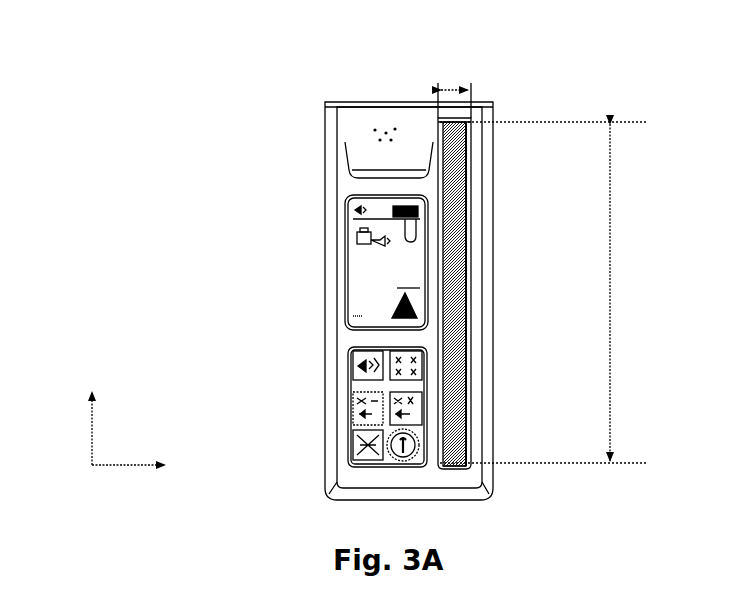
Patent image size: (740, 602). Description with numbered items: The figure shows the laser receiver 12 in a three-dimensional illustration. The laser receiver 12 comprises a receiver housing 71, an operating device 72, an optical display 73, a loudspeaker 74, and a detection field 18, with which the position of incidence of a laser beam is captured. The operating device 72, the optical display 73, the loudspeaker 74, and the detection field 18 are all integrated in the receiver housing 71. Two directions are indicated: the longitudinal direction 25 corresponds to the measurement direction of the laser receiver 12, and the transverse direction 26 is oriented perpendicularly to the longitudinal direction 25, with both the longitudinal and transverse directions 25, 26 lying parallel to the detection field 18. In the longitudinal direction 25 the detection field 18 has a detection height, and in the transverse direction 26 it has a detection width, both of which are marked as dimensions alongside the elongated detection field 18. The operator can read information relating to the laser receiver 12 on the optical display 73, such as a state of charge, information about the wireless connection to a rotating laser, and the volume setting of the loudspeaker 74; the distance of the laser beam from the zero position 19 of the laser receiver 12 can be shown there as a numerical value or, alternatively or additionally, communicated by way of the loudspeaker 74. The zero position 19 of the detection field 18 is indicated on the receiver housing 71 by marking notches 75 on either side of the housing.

The laser receiver 12 is at (262, 89).
The detection field 18 is at (493, 153).
The zero position 19 is at (460, 318).
The longitudinal direction 25 is at (75, 417).
The transverse direction 26 is at (136, 482).
The receiver housing 71 is at (477, 445).
The operating device 72 is at (350, 392).
The optical display 73 is at (345, 207).
The loudspeaker 74 is at (384, 126).
The marking notches 75 is at (328, 290).